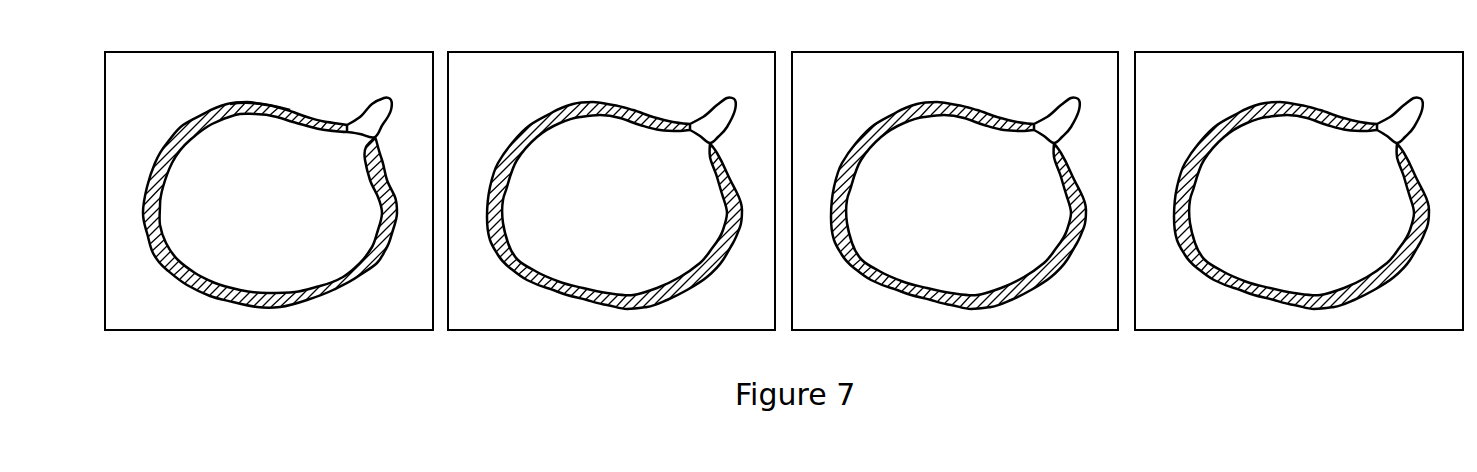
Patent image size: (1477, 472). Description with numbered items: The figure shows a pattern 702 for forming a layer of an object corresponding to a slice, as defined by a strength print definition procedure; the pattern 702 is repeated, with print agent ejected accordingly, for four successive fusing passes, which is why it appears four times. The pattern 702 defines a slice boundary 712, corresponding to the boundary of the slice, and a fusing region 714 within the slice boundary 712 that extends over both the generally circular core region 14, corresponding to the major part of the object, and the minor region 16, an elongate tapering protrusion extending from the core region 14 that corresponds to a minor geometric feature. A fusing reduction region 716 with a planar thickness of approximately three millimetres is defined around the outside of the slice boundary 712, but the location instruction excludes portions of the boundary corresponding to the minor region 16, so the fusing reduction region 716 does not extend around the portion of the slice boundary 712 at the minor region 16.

The pattern 702 is at (390, 26).
The core region 14 is at (327, 223).
The minor region 16 is at (370, 118).
The slice boundary 712 is at (188, 132).
The fusing region 714 is at (205, 230).
The fusing reduction region 716 is at (282, 112).